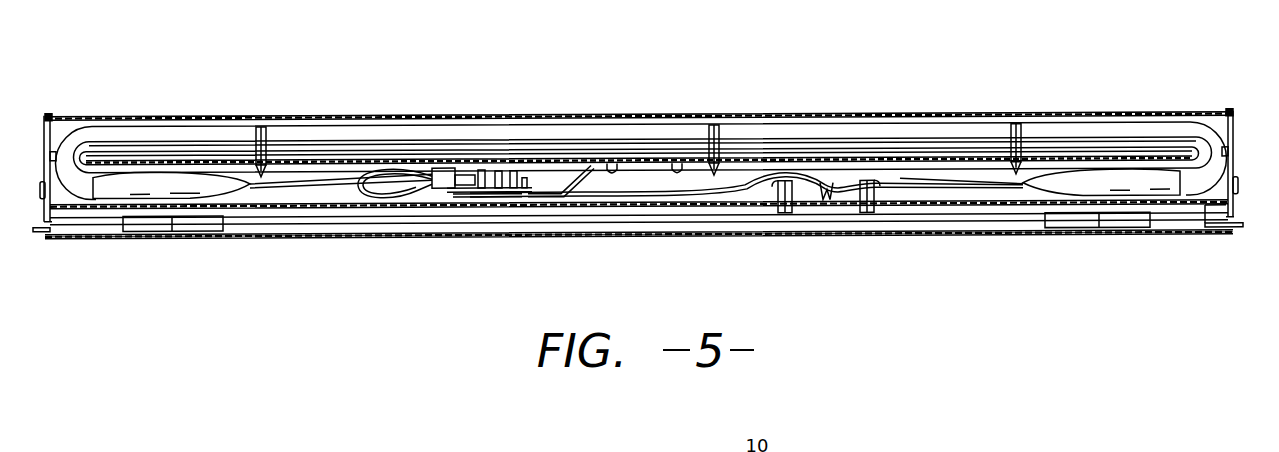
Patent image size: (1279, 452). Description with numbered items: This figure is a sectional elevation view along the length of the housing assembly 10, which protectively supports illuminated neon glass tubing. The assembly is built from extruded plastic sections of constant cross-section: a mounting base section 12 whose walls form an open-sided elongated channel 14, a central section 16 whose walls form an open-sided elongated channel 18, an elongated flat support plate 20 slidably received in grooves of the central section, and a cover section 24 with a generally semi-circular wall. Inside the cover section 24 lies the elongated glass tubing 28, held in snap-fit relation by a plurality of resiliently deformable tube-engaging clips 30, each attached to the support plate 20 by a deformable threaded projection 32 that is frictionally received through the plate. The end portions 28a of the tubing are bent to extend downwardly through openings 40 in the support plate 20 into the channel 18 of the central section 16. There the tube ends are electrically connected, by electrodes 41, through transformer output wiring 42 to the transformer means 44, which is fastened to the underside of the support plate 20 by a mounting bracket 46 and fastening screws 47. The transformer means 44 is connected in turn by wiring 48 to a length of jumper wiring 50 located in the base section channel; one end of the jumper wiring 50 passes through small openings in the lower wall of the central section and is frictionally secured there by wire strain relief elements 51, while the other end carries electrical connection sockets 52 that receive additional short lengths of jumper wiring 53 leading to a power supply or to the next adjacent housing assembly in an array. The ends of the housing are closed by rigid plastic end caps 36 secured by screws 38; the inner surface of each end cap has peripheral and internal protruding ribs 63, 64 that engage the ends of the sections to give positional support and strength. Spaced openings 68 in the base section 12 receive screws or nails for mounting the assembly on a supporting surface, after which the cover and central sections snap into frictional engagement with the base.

The housing assembly 10 is at (426, 256).
The mounting base section 12 is at (368, 240).
The open-sided elongated channel 14 is at (452, 227).
The central section 16 is at (107, 211).
The open-sided elongated channel 18 is at (943, 196).
The elongated flat support plate 20 is at (338, 157).
The cover section 24 is at (850, 116).
The glass tubing 28 is at (620, 134).
The end portions of the tubing 28a is at (83, 196).
The tube-engaging clips 30 is at (266, 136).
The deformable threaded projection 32 is at (255, 152).
The end caps 36 is at (43, 128).
The screws 38 is at (40, 190).
The openings 40 is at (56, 155).
The electrodes 41 is at (160, 190).
The transformer output wiring 42 is at (255, 186).
The transformer means 44 is at (433, 176).
The mounting bracket 46 is at (562, 173).
The fastening screws 47 is at (615, 173).
The wiring 48 is at (747, 199).
The jumper wiring 50 is at (710, 216).
The wire strain relief elements 51 is at (788, 217).
The electrical connection sockets 52 is at (197, 225).
The jumper wiring 53 is at (38, 233).
The peripheral protruding ribs 63 is at (50, 117).
The internal protruding ribs 64 is at (1211, 210).
The spaced openings 68 is at (291, 237).